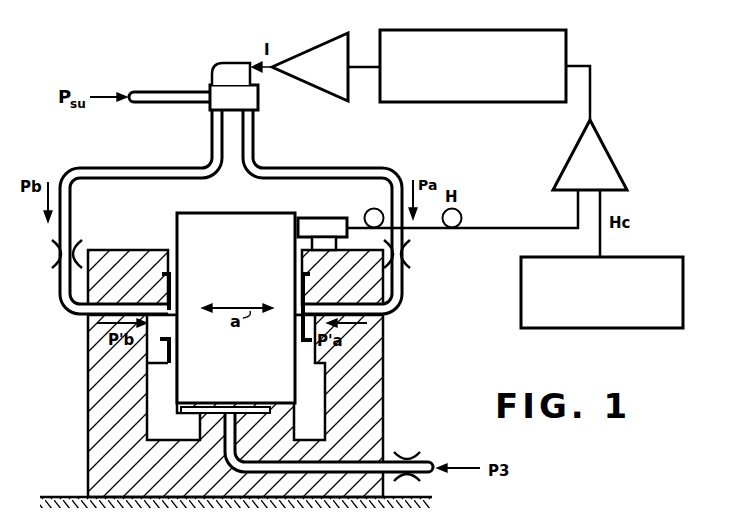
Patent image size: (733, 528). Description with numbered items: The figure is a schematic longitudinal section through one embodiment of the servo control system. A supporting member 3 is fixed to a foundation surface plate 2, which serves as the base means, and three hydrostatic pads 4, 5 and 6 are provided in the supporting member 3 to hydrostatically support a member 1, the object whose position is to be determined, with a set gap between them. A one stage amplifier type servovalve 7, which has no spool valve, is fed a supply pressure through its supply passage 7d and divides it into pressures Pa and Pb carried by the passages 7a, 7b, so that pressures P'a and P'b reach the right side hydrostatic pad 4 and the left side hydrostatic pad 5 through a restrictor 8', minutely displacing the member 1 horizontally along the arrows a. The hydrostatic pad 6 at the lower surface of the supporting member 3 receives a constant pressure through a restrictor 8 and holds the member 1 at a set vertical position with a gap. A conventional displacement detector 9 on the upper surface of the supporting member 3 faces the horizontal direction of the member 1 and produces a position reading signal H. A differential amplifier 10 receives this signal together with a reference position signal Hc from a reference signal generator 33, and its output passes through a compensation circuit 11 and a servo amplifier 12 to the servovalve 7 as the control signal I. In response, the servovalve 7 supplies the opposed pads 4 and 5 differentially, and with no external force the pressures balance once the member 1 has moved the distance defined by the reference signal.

The member 1 is at (178, 227).
The foundation surface plate 2 is at (60, 497).
The supporting member 3 is at (376, 358).
The hydrostatic pad 4 is at (301, 330).
The hydrostatic pad 5 is at (168, 294).
The hydrostatic pad 6 is at (243, 405).
The servovalve 7 is at (212, 74).
The pipe to chamber a 7a is at (253, 128).
The pipe to chamber b 7b is at (212, 131).
The supply pipe 7d is at (160, 92).
The restrictor 8 is at (329, 448).
The restrictor 8' is at (235, 262).
The displacement detector 9 is at (333, 219).
The differential amplifier 10 is at (590, 155).
The compensation circuit 11 is at (416, 103).
The servo amplifier 12 is at (326, 67).
The reference signal generator 33 is at (520, 288).